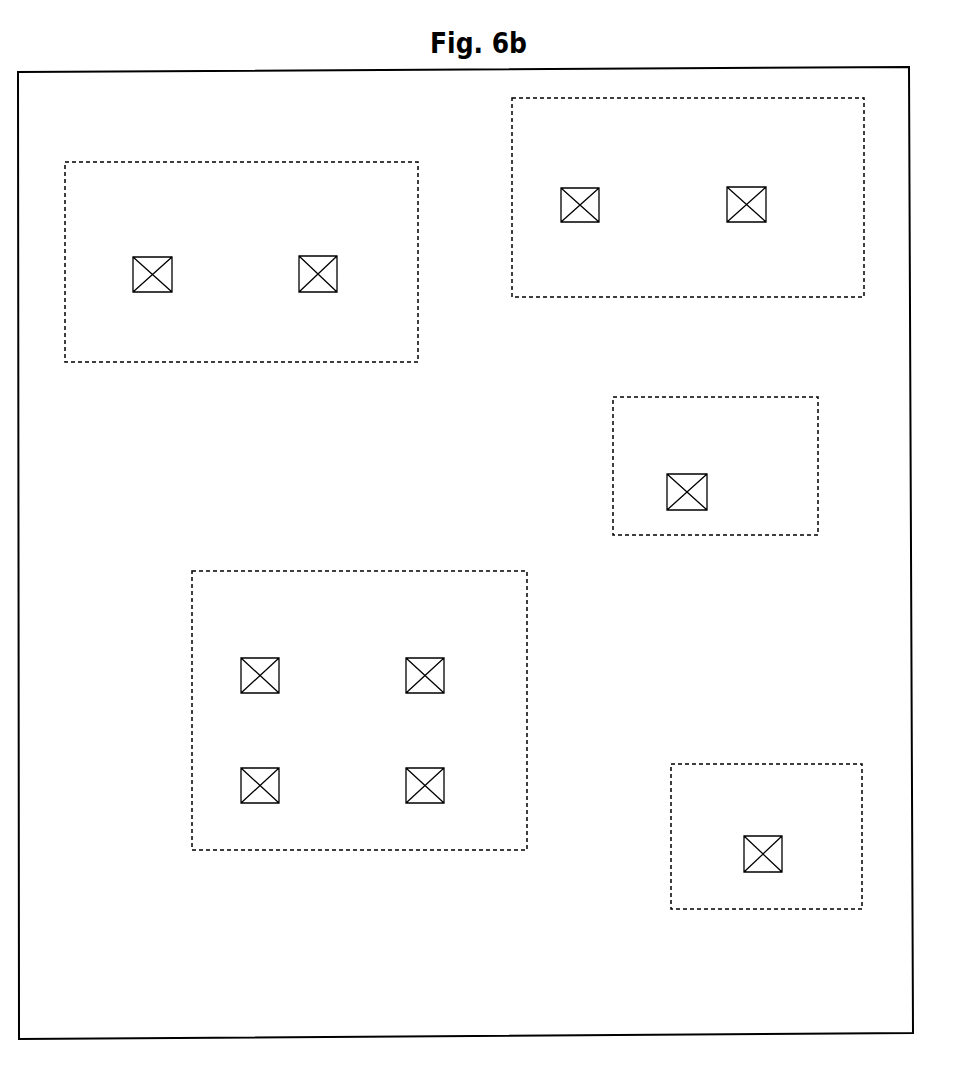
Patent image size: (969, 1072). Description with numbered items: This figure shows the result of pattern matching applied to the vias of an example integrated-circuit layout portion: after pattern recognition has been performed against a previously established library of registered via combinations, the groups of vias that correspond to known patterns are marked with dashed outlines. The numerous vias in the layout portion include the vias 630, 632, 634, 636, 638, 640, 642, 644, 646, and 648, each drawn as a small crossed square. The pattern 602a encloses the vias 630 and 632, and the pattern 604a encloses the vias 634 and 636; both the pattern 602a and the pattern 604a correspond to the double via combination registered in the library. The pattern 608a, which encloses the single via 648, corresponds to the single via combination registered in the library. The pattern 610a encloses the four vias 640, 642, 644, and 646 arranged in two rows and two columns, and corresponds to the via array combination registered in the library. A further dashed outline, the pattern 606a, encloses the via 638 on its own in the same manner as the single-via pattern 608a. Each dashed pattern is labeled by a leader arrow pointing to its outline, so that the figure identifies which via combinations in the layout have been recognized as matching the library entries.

The pattern 602a is at (183, 405).
The pattern 604a is at (536, 334).
The third cluster region 606a is at (617, 562).
The pattern 608a is at (688, 947).
The pattern 610a is at (185, 883).
The via 630 is at (152, 257).
The via 632 is at (323, 256).
The via 634 is at (575, 188).
The via 636 is at (747, 187).
The via 638 is at (690, 474).
The via 640 is at (258, 658).
The via 642 is at (428, 658).
The via 644 is at (258, 768).
The via 646 is at (425, 768).
The via 648 is at (758, 836).